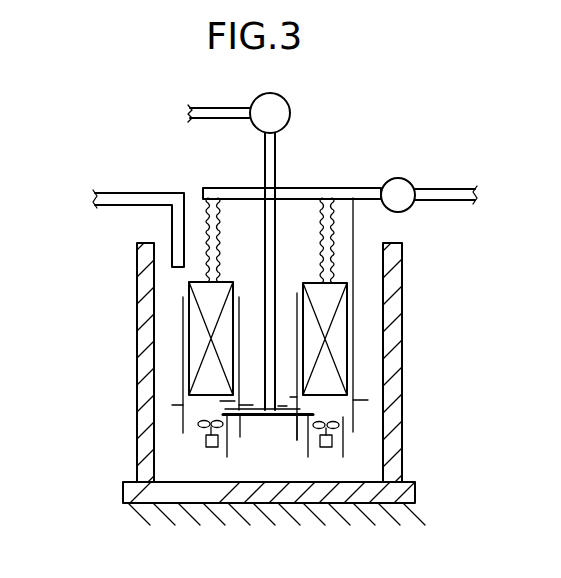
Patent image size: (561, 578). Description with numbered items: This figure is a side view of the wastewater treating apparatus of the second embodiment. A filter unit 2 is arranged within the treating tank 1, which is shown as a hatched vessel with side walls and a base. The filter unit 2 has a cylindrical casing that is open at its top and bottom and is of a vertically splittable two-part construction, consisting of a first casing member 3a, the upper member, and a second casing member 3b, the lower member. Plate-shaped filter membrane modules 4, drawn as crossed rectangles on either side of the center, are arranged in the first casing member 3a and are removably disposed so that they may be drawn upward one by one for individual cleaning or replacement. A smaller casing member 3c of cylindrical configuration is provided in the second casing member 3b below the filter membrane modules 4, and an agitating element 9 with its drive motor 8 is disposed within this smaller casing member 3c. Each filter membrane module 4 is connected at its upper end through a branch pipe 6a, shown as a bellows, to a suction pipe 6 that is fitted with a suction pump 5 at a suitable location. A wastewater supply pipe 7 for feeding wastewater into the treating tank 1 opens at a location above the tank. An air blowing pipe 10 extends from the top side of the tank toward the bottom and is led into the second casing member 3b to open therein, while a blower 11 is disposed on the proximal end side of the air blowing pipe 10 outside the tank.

The treating tank 1 is at (388, 433).
The filter unit 2 is at (178, 364).
The first casing member 3a is at (182, 338).
The second casing member 3b is at (183, 420).
The smaller casing member 3c is at (223, 414).
The filter membrane module 4 is at (188, 288).
The suction pump 5 is at (397, 177).
The suction pipe 6 is at (427, 186).
The branch pipe 6a is at (208, 226).
The wastewater supply pipe 7 is at (133, 193).
The drive motor 8 is at (212, 448).
The agitating element 9 is at (202, 434).
The air blowing pipe 10 is at (276, 150).
The blower 11 is at (284, 98).